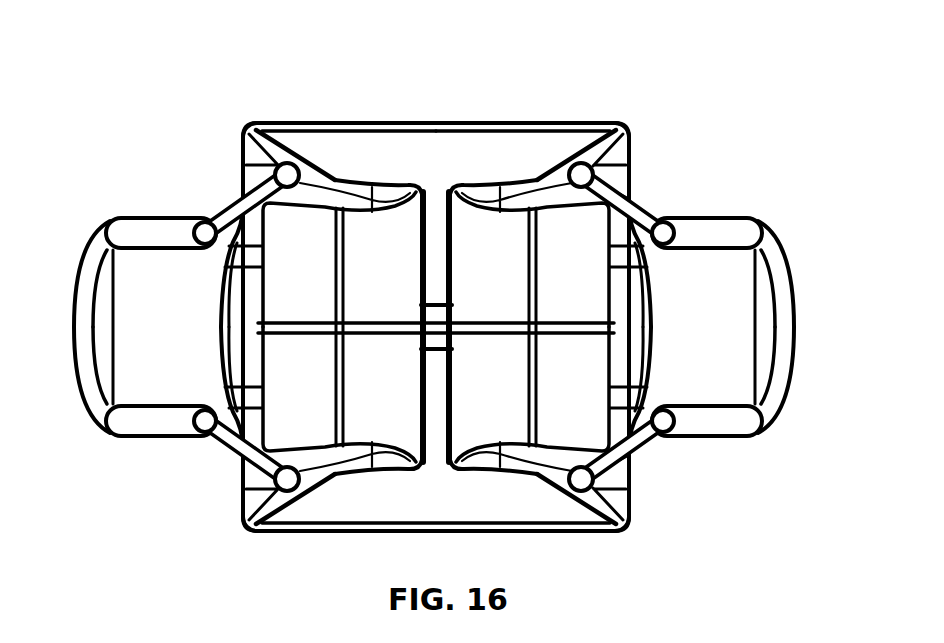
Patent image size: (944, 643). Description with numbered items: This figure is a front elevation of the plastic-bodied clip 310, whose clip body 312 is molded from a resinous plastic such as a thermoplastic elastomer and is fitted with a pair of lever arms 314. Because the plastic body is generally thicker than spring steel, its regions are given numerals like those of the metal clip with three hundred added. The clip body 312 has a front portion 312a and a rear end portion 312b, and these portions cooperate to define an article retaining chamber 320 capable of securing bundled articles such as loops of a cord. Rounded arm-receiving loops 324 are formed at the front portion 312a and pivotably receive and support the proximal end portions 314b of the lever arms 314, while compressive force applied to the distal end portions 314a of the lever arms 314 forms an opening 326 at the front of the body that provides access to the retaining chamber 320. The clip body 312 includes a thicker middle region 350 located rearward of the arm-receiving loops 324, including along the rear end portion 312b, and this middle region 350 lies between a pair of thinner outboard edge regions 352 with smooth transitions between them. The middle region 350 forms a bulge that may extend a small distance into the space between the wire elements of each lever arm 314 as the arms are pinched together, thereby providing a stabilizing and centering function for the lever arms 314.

The plastic-bodied clip 310 is at (737, 95).
The clip body 312 is at (249, 122).
The front portion 312a is at (491, 150).
The rear end portion 312b is at (353, 100).
The lever arms 314 is at (689, 216).
The distal end portions of lever arms 314a is at (100, 197).
The proximal end portions of lever arms 314b is at (263, 495).
The article retaining chamber 320 is at (333, 500).
The arm-receiving loops 324 is at (280, 362).
The opening 326 is at (437, 172).
The thicker middle region 350 is at (200, 317).
The thinner outboard edge regions 352 is at (230, 132).